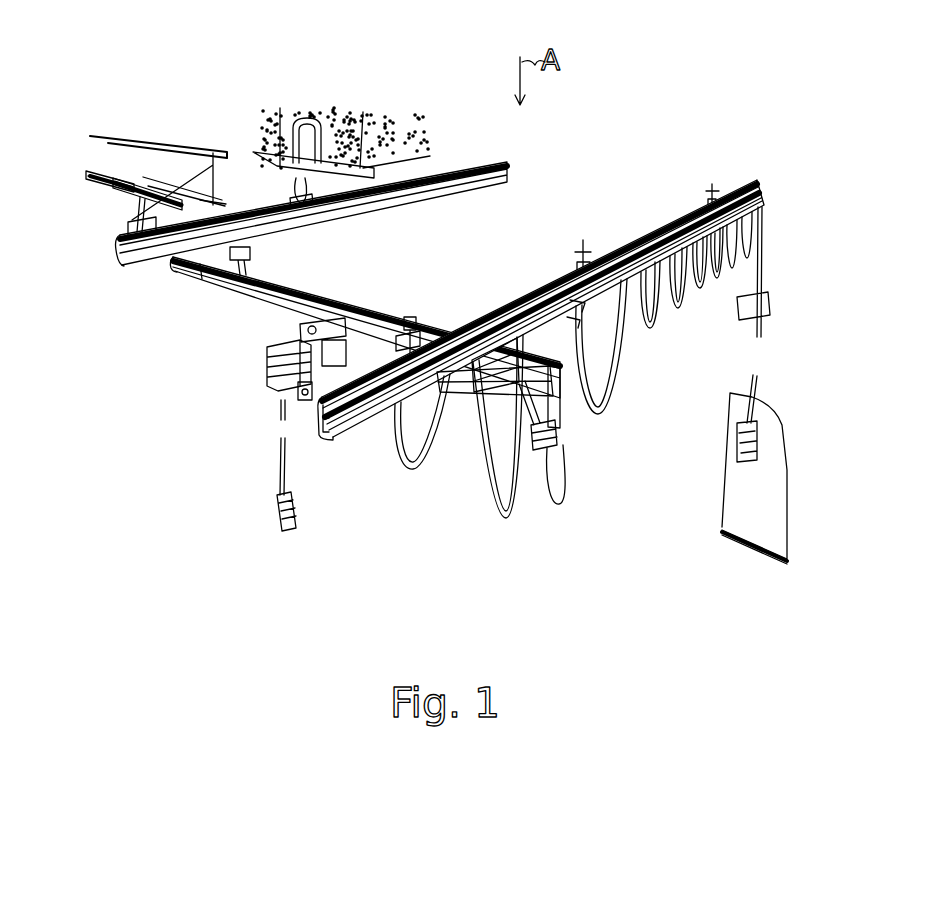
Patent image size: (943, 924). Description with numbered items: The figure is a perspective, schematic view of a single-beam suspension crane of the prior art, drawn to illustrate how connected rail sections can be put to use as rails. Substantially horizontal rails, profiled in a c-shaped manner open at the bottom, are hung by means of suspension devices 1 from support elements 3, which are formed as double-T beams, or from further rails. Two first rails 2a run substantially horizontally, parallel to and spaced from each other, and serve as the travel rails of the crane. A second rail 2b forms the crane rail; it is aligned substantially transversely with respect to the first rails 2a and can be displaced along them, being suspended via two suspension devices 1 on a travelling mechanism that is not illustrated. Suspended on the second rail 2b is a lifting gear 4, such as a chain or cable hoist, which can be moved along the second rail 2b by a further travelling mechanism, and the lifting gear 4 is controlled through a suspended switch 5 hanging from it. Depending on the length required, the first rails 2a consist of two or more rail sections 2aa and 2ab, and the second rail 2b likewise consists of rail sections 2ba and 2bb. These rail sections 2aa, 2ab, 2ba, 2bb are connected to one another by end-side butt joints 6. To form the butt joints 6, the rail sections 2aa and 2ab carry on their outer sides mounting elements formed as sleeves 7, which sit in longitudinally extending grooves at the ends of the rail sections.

The suspension device 1 is at (225, 150).
The first rail 2a is at (544, 318).
The rail section 2aa is at (522, 305).
The rail section 2ab is at (673, 223).
The second rail 2b is at (233, 287).
The rail section 2ba is at (190, 268).
The rail section 2bb is at (456, 382).
The support element 3 is at (140, 155).
The lifting gear 4 is at (268, 383).
The suspended switch 5 is at (277, 510).
The butt joint 6 is at (319, 286).
The sleeve 7 is at (322, 288).